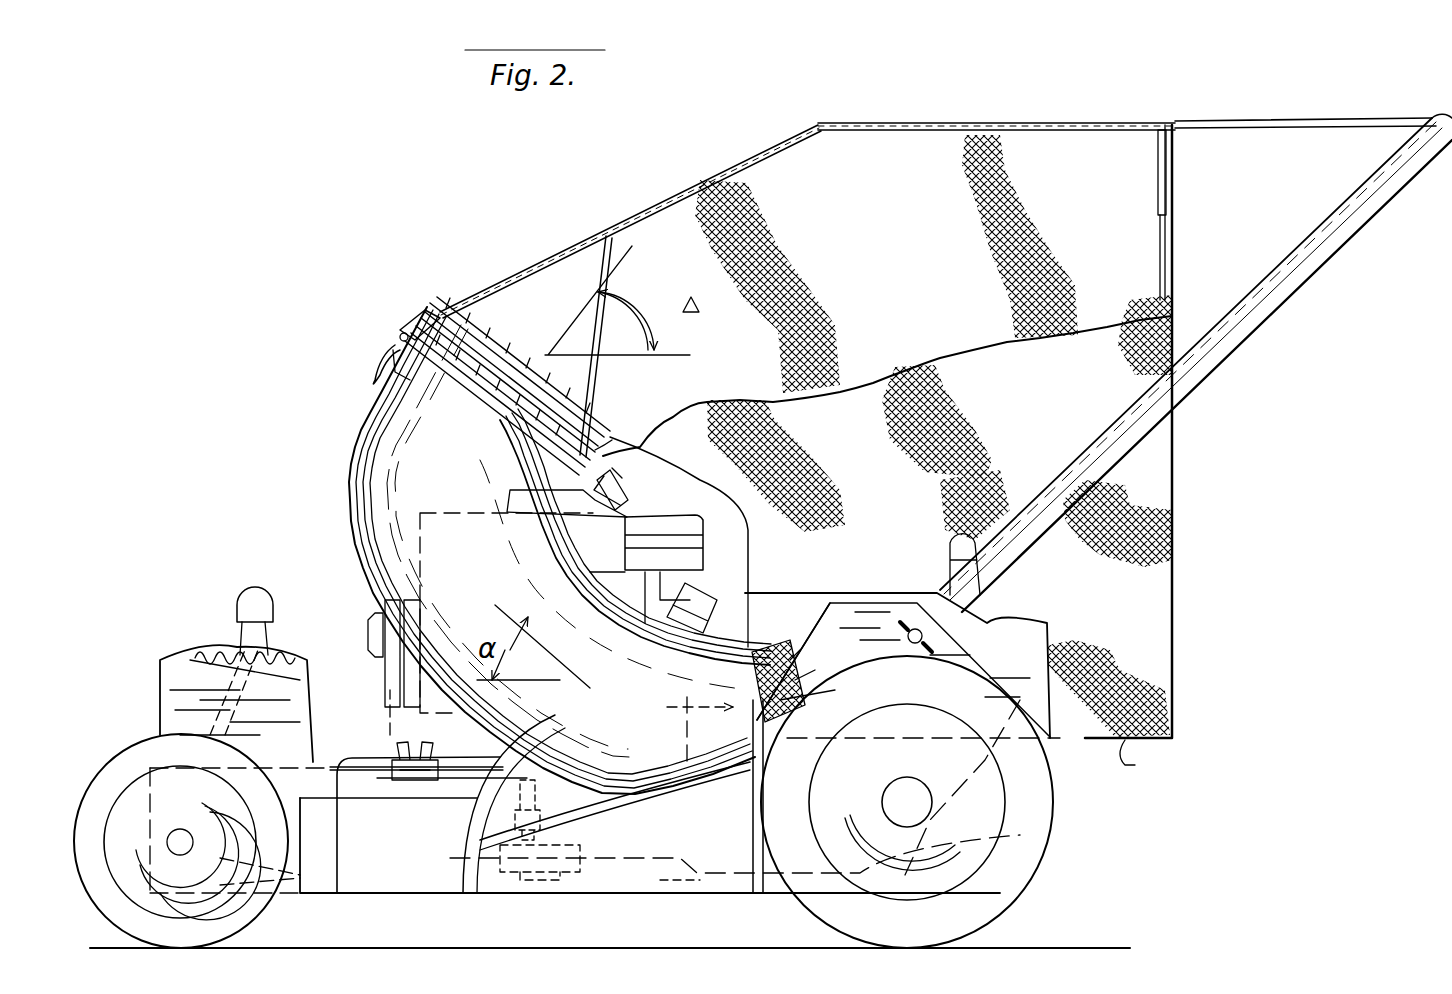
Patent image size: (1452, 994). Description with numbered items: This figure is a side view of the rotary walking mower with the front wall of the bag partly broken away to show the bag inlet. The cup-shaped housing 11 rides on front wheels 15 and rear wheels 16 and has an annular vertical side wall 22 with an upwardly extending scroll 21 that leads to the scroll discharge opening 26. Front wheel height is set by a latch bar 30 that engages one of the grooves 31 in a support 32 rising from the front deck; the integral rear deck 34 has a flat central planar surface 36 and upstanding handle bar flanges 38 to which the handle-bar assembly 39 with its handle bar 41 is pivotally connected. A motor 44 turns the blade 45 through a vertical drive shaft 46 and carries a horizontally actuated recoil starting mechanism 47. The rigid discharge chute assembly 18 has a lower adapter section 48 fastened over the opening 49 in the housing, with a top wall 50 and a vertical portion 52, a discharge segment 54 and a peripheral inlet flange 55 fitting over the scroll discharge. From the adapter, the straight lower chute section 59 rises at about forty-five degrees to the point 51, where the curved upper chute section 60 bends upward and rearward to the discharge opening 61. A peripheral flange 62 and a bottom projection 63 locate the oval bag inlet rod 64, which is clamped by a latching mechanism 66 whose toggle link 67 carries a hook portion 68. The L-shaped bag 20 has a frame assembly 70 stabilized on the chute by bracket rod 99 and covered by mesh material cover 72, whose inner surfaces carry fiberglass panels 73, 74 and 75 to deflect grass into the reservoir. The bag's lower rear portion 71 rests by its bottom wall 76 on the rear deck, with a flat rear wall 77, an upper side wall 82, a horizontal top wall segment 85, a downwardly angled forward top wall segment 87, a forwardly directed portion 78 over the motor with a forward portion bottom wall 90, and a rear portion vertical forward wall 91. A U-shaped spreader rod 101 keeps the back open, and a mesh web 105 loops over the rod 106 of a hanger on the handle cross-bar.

The housing 11 is at (362, 758).
The front wheels 15 is at (130, 755).
The rear wheels 16 is at (1045, 858).
The discharge chute assembly 18 is at (340, 458).
The grass receiving and collecting container or bag 20 is at (755, 138).
The scroll 21 is at (800, 630).
The annular vertical side wall 22 is at (330, 880).
The scroll discharge opening 26 is at (726, 665).
The latch bar 30 is at (240, 627).
The grooves 31 is at (235, 692).
The support 32 is at (200, 657).
The rear deck 34 is at (1050, 670).
The central planar surface 36 is at (1000, 735).
The handle bar flanges 38 is at (890, 610).
The handle-bar assembly 39 is at (1208, 385).
The handle bar 41 is at (1298, 280).
The motor 44 is at (720, 550).
The blade 45 is at (718, 878).
The vertical drive shaft 46 is at (490, 765).
The recoil starting mechanism 47 is at (635, 512).
The lower adapter section 48 is at (625, 470).
The opening 49 is at (440, 826).
The top wall 50 is at (548, 790).
The point 51 is at (495, 605).
The vertical portion 52 is at (572, 880).
The discharge segment 54 is at (735, 628).
The peripheral inlet flange 55 is at (775, 700).
The lower chute section 59 is at (580, 612).
The upper chute section 60 is at (470, 480).
The discharge opening 61 is at (482, 330).
The peripheral flange 62 is at (480, 365).
The projection 63 is at (600, 450).
The bag inlet rod 64 is at (510, 390).
The latching mechanism 66 is at (390, 318).
The toggle link 67 is at (395, 338).
The hook portion 68 is at (425, 310).
The frame assembly 70 is at (585, 225).
The lower rear portion 71 is at (1180, 610).
The mesh material cover 72 is at (970, 308).
The fiberglass panel 73 is at (745, 170).
The fiberglass panel 74 is at (1015, 140).
The fiberglass panel 75 is at (990, 150).
The bottom wall 76 is at (1145, 761).
The rear wall 77 is at (1175, 255).
The forwardly directed portion 78 is at (680, 225).
The upper side wall 82 is at (985, 420).
The top wall segment 85 is at (1090, 123).
The forward top wall segment 87 is at (735, 165).
The forward portion bottom wall 90 is at (715, 485).
The rear portion vertical forward wall 91 is at (745, 580).
The bracket rod 99 is at (590, 370).
The spreader rod 101 is at (1175, 165).
The mesh web 105 is at (1285, 124).
The rod 106 is at (1440, 118).